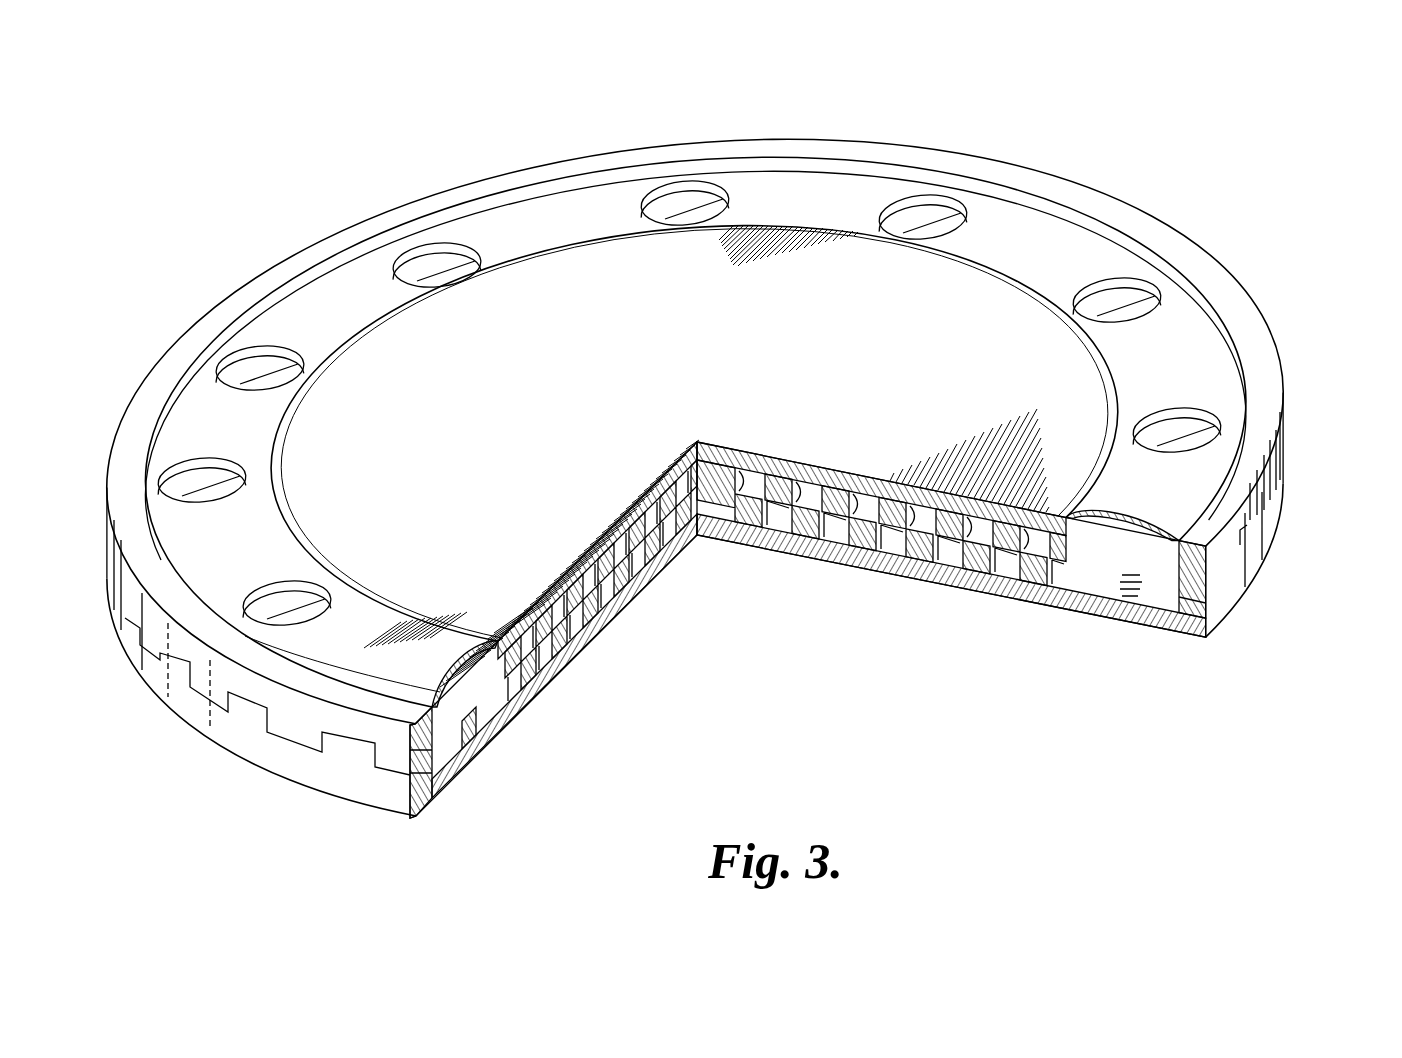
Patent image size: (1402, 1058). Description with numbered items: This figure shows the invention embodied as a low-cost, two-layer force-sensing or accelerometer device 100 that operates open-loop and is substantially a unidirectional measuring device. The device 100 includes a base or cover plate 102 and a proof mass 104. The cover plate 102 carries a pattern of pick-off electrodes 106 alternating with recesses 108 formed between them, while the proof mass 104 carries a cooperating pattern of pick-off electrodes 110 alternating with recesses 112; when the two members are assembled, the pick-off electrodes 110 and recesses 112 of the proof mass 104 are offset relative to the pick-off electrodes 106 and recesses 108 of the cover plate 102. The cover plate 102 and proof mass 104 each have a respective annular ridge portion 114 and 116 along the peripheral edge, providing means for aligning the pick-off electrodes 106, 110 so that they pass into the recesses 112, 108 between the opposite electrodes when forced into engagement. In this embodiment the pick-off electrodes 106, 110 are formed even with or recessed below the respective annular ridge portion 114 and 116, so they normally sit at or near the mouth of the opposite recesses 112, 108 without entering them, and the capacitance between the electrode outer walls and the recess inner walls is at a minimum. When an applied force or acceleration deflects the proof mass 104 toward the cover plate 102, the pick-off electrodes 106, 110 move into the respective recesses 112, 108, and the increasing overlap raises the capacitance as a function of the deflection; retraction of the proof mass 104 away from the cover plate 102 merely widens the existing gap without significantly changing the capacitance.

The force-sensing or accelerometer device 100 is at (745, 452).
The cover plate 102 is at (1273, 546).
The proof mass 104 is at (1276, 349).
The pick-off electrodes 106 is at (743, 490).
The recesses 108 is at (778, 510).
The pick-off electrodes 110 is at (750, 458).
The recesses 112 is at (770, 470).
The annular ridge portion 114 is at (1207, 623).
The annular ridge portion 116 is at (1187, 567).